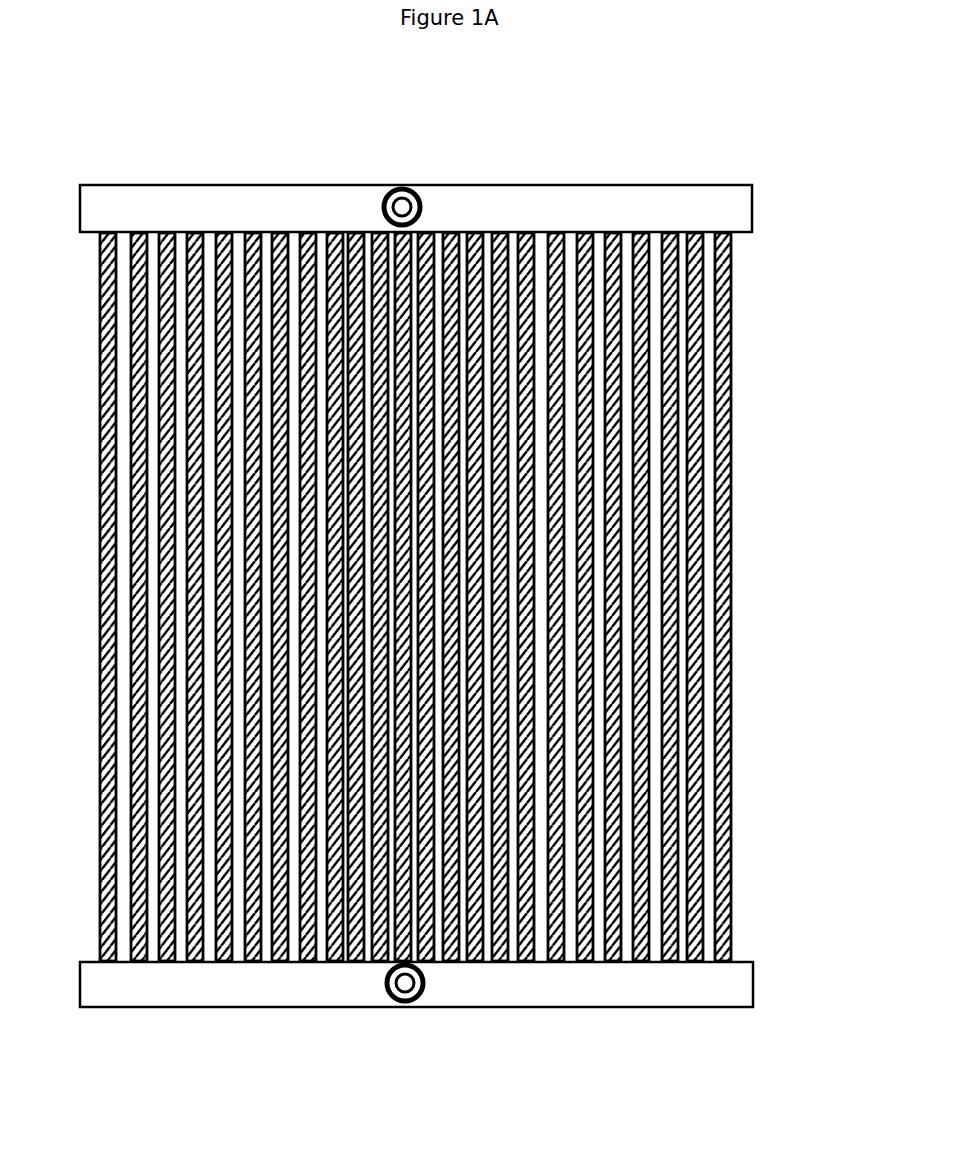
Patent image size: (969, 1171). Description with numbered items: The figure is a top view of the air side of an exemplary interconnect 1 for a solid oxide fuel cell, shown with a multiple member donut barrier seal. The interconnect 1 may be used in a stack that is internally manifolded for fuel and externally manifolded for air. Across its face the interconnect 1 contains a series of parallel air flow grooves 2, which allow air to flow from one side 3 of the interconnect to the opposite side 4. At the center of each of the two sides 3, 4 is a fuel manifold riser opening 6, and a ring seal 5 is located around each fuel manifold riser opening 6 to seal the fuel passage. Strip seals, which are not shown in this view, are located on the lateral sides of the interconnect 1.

The interconnect 1 is at (453, 588).
The air flow grooves 2 is at (240, 495).
The one side 3 is at (753, 205).
The opposite side 4 is at (755, 997).
The ring seals 5 is at (424, 196).
The fuel manifold riser openings 6 is at (402, 207).